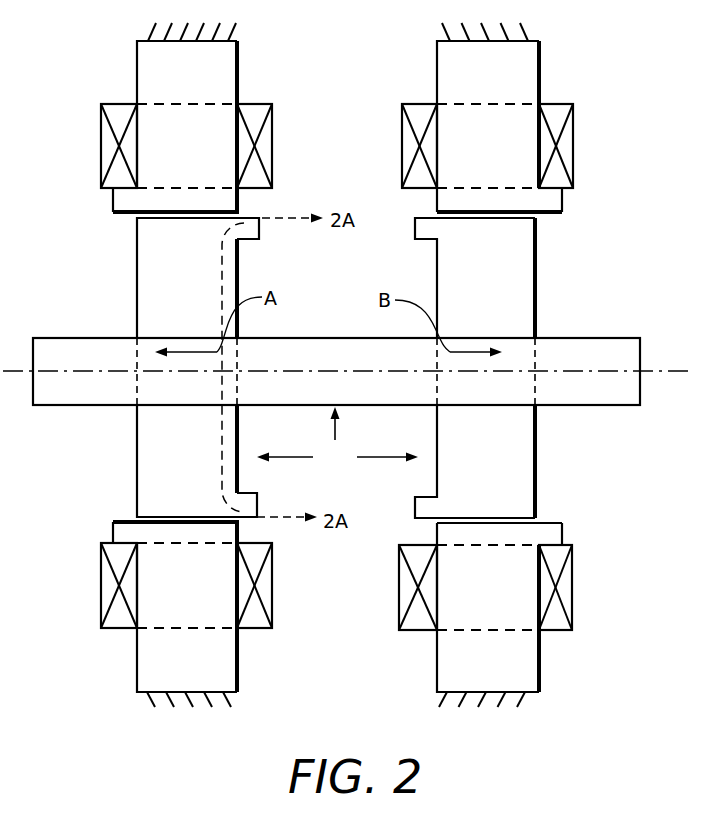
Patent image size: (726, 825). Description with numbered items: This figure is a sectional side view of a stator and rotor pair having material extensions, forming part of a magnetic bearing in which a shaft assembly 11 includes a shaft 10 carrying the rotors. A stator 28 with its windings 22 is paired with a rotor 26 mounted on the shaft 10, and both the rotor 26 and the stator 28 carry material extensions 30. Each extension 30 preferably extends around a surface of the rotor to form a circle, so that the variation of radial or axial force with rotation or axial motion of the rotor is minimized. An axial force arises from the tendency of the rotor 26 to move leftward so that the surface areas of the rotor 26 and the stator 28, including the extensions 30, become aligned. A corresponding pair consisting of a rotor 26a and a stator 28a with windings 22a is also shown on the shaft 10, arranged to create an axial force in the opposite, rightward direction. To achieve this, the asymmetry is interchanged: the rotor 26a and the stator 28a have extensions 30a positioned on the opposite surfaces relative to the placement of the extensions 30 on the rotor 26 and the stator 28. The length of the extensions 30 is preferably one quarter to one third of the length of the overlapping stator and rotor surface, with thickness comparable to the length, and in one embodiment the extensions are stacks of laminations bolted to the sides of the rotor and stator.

The shaft 10 is at (346, 365).
The shaft assembly 11 is at (337, 438).
The windings 22 is at (107, 147).
The windings 22a is at (412, 143).
The rotor 26 is at (198, 299).
The rotor 26a is at (498, 302).
The stator 28 is at (196, 82).
The stator 28a is at (528, 89).
The material extensions 30 is at (118, 197).
The material extensions 30a is at (417, 232).